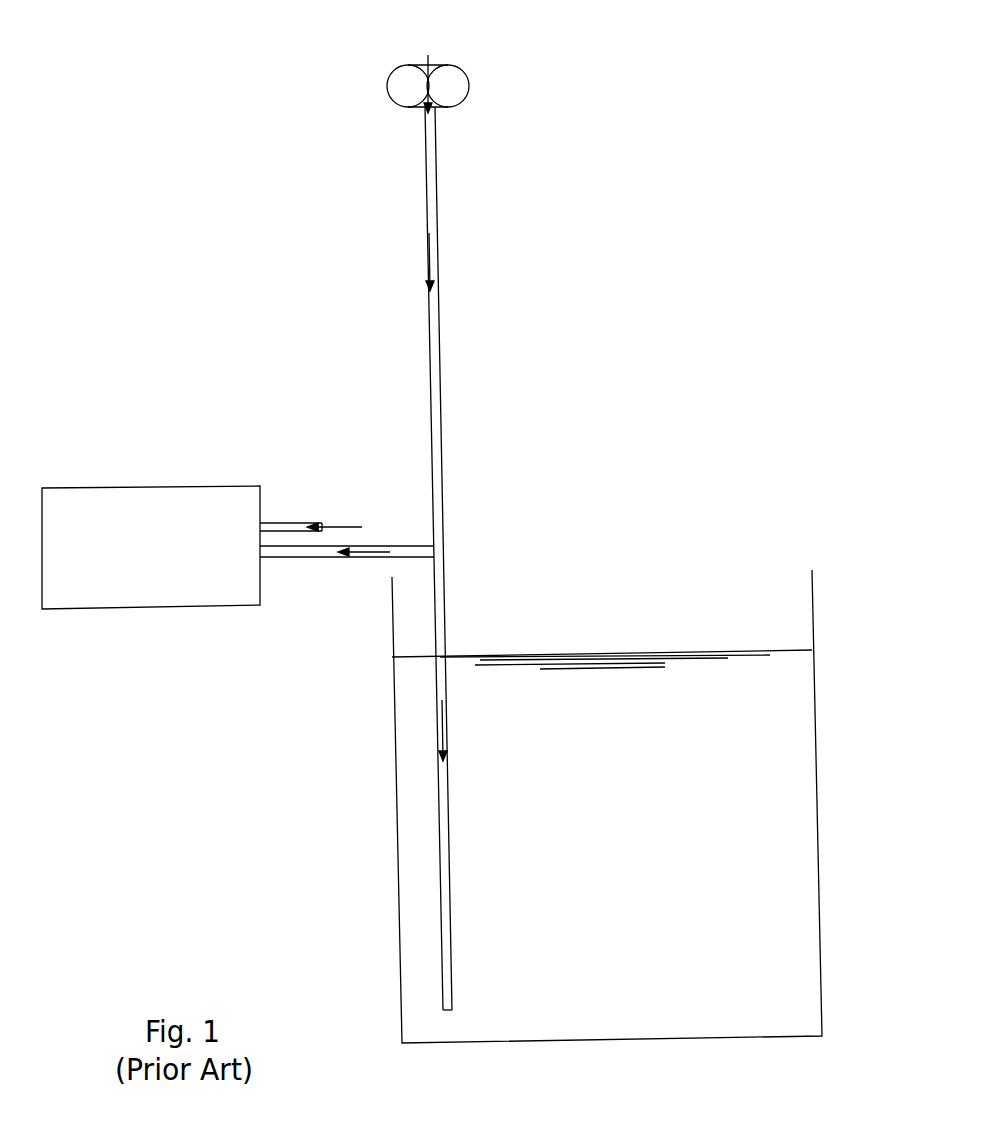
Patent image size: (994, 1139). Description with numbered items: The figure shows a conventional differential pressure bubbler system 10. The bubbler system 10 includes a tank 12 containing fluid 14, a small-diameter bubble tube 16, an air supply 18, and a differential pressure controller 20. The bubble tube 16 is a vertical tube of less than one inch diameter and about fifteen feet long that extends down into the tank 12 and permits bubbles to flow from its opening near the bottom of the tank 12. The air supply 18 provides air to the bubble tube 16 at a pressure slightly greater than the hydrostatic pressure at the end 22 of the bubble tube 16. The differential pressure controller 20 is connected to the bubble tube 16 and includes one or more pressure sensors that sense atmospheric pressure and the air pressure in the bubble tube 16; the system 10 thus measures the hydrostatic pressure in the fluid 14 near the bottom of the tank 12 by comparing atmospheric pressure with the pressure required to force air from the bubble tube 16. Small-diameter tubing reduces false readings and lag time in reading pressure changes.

The differential pressure bubbler system 10 is at (618, 202).
The tank 12 is at (397, 827).
The fluid 14 is at (637, 715).
The bubble tube 16 is at (441, 431).
The air supply 18 is at (388, 86).
The differential pressure controller 20 is at (149, 486).
The end of bubble tube 22 is at (445, 1010).